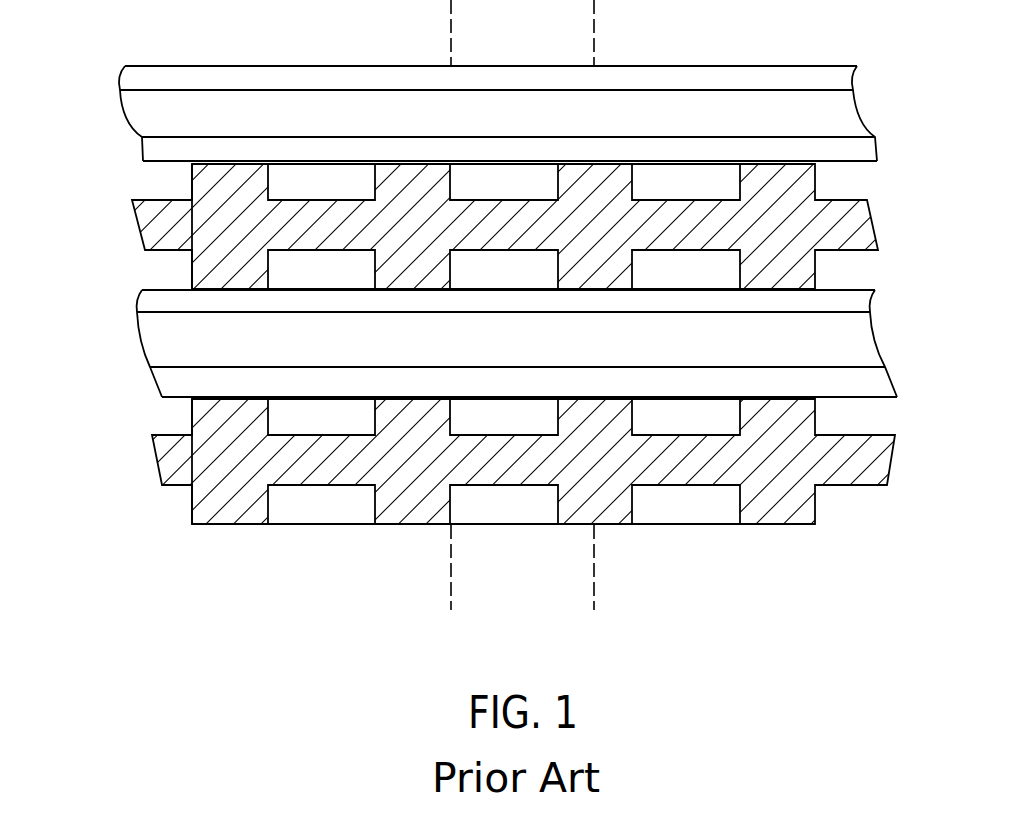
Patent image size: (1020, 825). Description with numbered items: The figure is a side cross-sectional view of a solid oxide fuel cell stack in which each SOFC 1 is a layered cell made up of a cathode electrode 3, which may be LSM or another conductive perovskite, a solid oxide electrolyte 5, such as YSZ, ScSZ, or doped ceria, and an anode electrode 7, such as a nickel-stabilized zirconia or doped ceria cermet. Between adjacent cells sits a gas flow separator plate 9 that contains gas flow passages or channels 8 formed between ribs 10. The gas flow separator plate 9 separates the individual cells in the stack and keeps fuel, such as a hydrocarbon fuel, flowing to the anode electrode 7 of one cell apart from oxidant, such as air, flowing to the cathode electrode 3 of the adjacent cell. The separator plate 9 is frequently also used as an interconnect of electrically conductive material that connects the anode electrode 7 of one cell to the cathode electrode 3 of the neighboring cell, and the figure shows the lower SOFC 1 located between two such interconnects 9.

The solid oxide fuel cell 1 is at (903, 65).
The cathode electrode 3 is at (464, 187).
The solid oxide electrolyte 5 is at (469, 229).
The anode electrode 7 is at (475, 262).
The gas flow channels 8 is at (504, 343).
The gas flow separator plate 9 is at (903, 178).
The ribs 10 is at (192, 508).